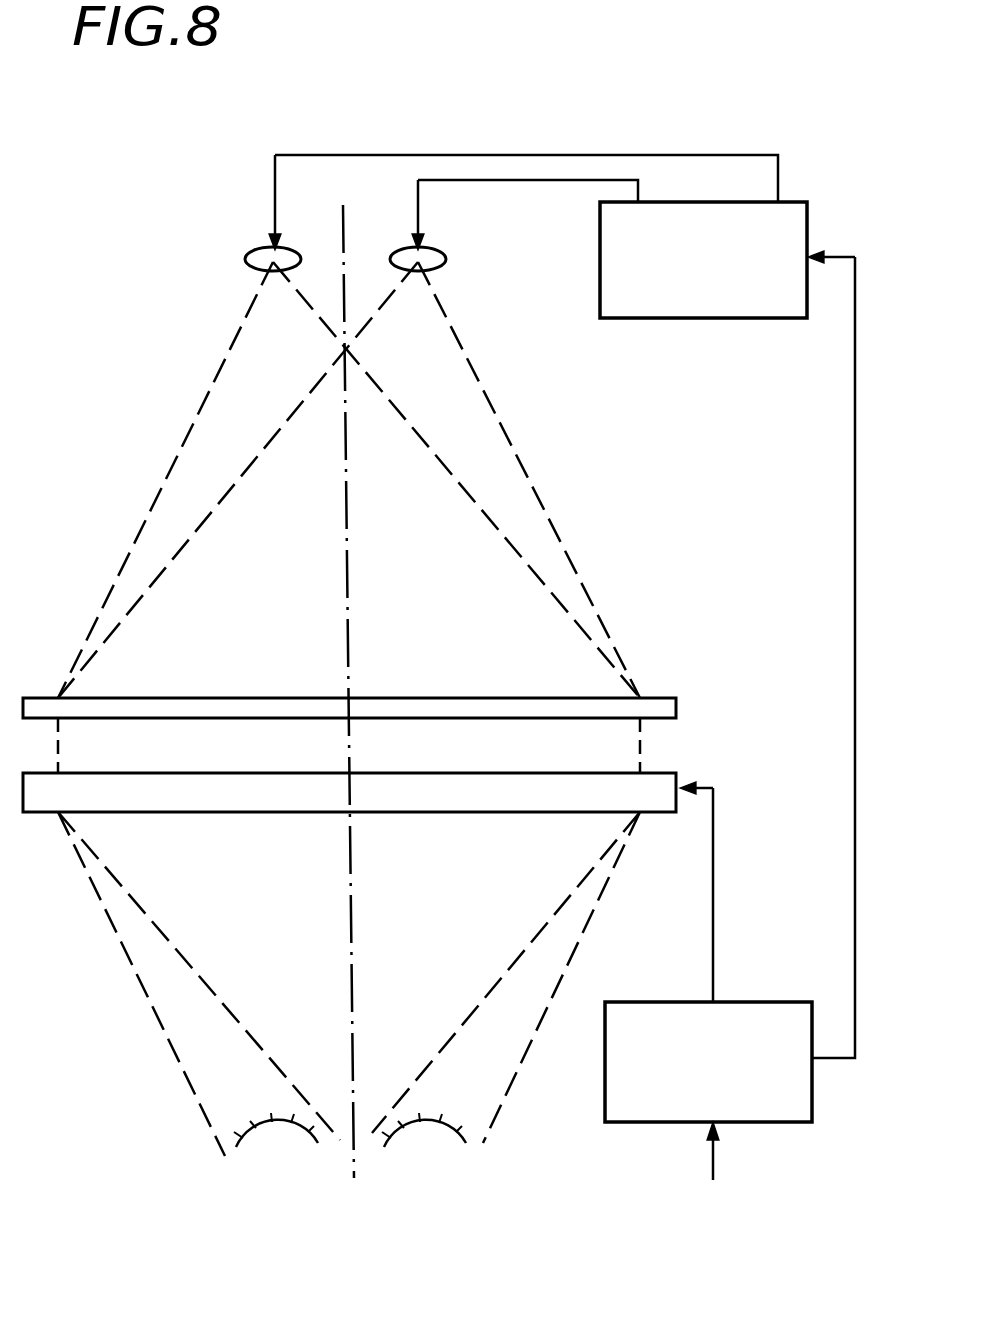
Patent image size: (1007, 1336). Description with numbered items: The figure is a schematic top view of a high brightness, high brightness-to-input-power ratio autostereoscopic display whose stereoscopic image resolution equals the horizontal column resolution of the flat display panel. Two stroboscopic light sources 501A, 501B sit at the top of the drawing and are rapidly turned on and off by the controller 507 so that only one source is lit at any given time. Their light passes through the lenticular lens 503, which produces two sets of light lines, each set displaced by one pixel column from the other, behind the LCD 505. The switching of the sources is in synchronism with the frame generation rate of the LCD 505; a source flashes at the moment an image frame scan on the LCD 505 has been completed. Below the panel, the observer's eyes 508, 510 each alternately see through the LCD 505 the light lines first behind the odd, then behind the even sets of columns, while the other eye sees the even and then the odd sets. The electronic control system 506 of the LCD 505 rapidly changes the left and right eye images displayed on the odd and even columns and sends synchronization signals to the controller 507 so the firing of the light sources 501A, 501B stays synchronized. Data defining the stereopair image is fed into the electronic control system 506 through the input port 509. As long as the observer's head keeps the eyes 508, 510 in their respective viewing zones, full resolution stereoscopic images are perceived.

The stroboscopic light source 501A is at (263, 250).
The stroboscopic light source 501B is at (432, 250).
The lenticular lens 503 is at (672, 697).
The LCD 505 is at (672, 772).
The electronic control system 506 is at (730, 689).
The controller 507 is at (727, 260).
The observer's eye 508 is at (258, 1124).
The input port 509 is at (705, 1168).
The observer's eye 510 is at (437, 1124).